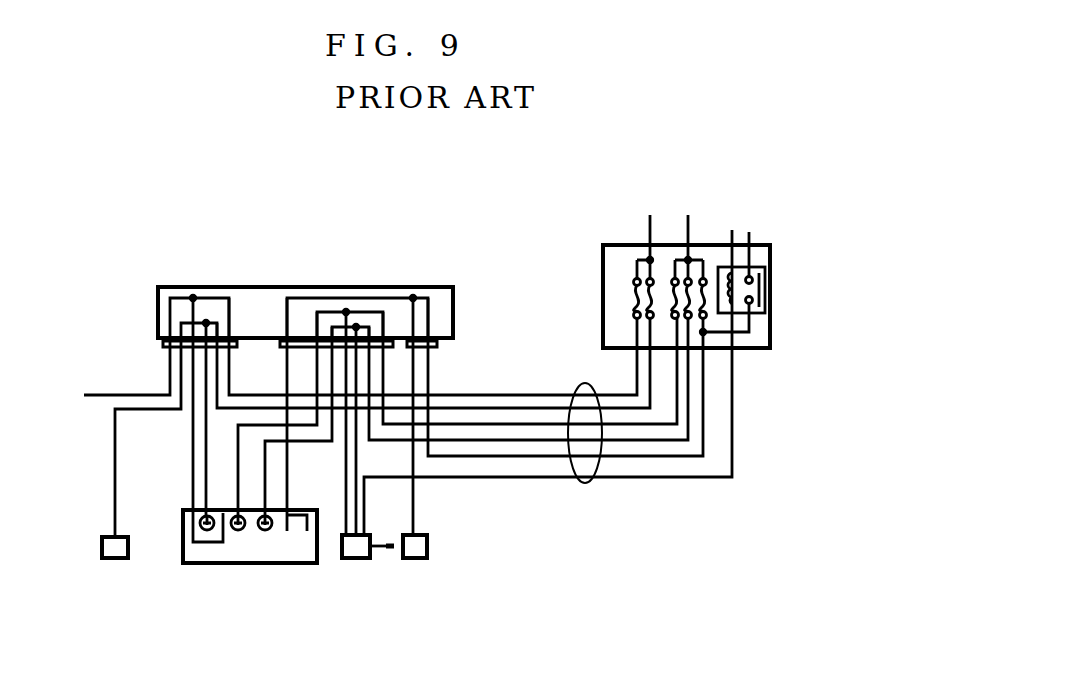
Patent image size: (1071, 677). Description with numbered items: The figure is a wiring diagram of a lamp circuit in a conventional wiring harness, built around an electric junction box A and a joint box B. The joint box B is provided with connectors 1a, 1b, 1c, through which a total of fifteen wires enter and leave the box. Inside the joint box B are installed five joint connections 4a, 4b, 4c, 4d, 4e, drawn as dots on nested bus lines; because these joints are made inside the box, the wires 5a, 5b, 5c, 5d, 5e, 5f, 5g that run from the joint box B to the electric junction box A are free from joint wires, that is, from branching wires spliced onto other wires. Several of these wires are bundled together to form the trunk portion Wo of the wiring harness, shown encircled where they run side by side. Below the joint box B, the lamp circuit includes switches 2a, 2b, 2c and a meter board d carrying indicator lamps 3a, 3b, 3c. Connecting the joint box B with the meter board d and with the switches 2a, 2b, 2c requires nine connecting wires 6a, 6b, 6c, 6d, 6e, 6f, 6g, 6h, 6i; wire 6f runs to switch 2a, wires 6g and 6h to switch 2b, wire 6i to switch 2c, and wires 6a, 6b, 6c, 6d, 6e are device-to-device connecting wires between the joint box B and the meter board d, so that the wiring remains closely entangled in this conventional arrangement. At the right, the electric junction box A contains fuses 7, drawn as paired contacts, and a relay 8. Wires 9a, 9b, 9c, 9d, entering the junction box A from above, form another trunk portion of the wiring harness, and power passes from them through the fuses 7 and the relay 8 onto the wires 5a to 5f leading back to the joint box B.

The electric junction box A is at (768, 330).
The joint box B is at (442, 290).
The meter board d is at (185, 551).
The trunk portion of the wiring harness Wo is at (585, 484).
The connector 1a is at (438, 343).
The connector 1b is at (283, 342).
The connector 1c is at (160, 343).
The switch 2a is at (117, 559).
The switch 2b is at (353, 559).
The switch 2c is at (413, 559).
The indicator lamp 3a is at (210, 532).
The indicator lamp 3b is at (238, 532).
The indicator lamp 3c is at (267, 532).
The joint connection 4a is at (413, 296).
The joint connection 4b is at (356, 325).
The joint connection 4c is at (345, 310).
The joint connection 4d is at (206, 321).
The joint connection 4e is at (192, 296).
The wire 5a is at (500, 478).
The wire 5b is at (533, 457).
The wire 5c is at (617, 441).
The wire 5d is at (653, 425).
The wire 5e is at (553, 407).
The wire 5f is at (507, 394).
The wire 5g is at (96, 394).
The connecting wire 6a is at (288, 490).
The connecting wire 6b is at (266, 458).
The connecting wire 6c is at (238, 487).
The connecting wire 6d is at (206, 463).
The connecting wire 6e is at (193, 428).
The connecting wire 6f is at (113, 482).
The connecting wire 6g is at (348, 467).
The connecting wire 6h is at (357, 518).
The connecting wire 6i is at (415, 505).
The fuses 7 is at (668, 290).
The relay 8 is at (767, 278).
The wire 9a is at (648, 215).
The wire 9b is at (688, 215).
The wire 9c is at (731, 230).
The wire 9d is at (749, 232).